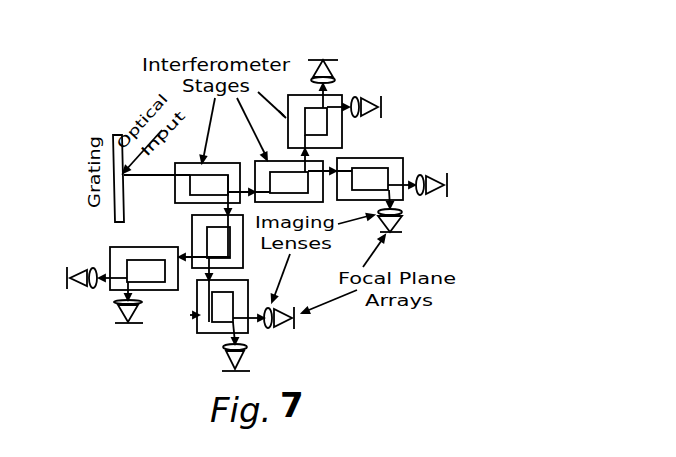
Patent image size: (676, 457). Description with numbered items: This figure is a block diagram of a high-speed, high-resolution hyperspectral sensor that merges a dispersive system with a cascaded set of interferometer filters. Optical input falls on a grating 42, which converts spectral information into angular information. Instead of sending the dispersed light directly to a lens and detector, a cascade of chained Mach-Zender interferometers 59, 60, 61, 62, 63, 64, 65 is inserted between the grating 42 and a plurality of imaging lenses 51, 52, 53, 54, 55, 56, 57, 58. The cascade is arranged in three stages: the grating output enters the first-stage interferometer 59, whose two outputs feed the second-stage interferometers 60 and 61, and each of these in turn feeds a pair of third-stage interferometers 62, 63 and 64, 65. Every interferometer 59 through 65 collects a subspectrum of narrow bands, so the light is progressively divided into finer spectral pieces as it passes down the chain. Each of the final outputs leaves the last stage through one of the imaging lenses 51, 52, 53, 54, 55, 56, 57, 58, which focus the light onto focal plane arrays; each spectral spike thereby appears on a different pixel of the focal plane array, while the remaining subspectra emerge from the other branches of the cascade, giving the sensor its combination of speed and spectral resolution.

The grating 42 is at (113, 133).
The imaging lens 51 is at (311, 76).
The imaging lens 52 is at (380, 93).
The imaging lens 53 is at (427, 170).
The imaging lens 54 is at (404, 220).
The imaging lens 55 is at (280, 326).
The imaging lens 56 is at (224, 360).
The imaging lens 57 is at (113, 305).
The imaging lens 58 is at (67, 268).
The interferometer 59 is at (222, 163).
The interferometer 60 is at (274, 157).
The interferometer 61 is at (189, 227).
The interferometer 62 is at (345, 133).
The interferometer 63 is at (390, 158).
The interferometer 64 is at (246, 268).
The interferometer 65 is at (139, 247).